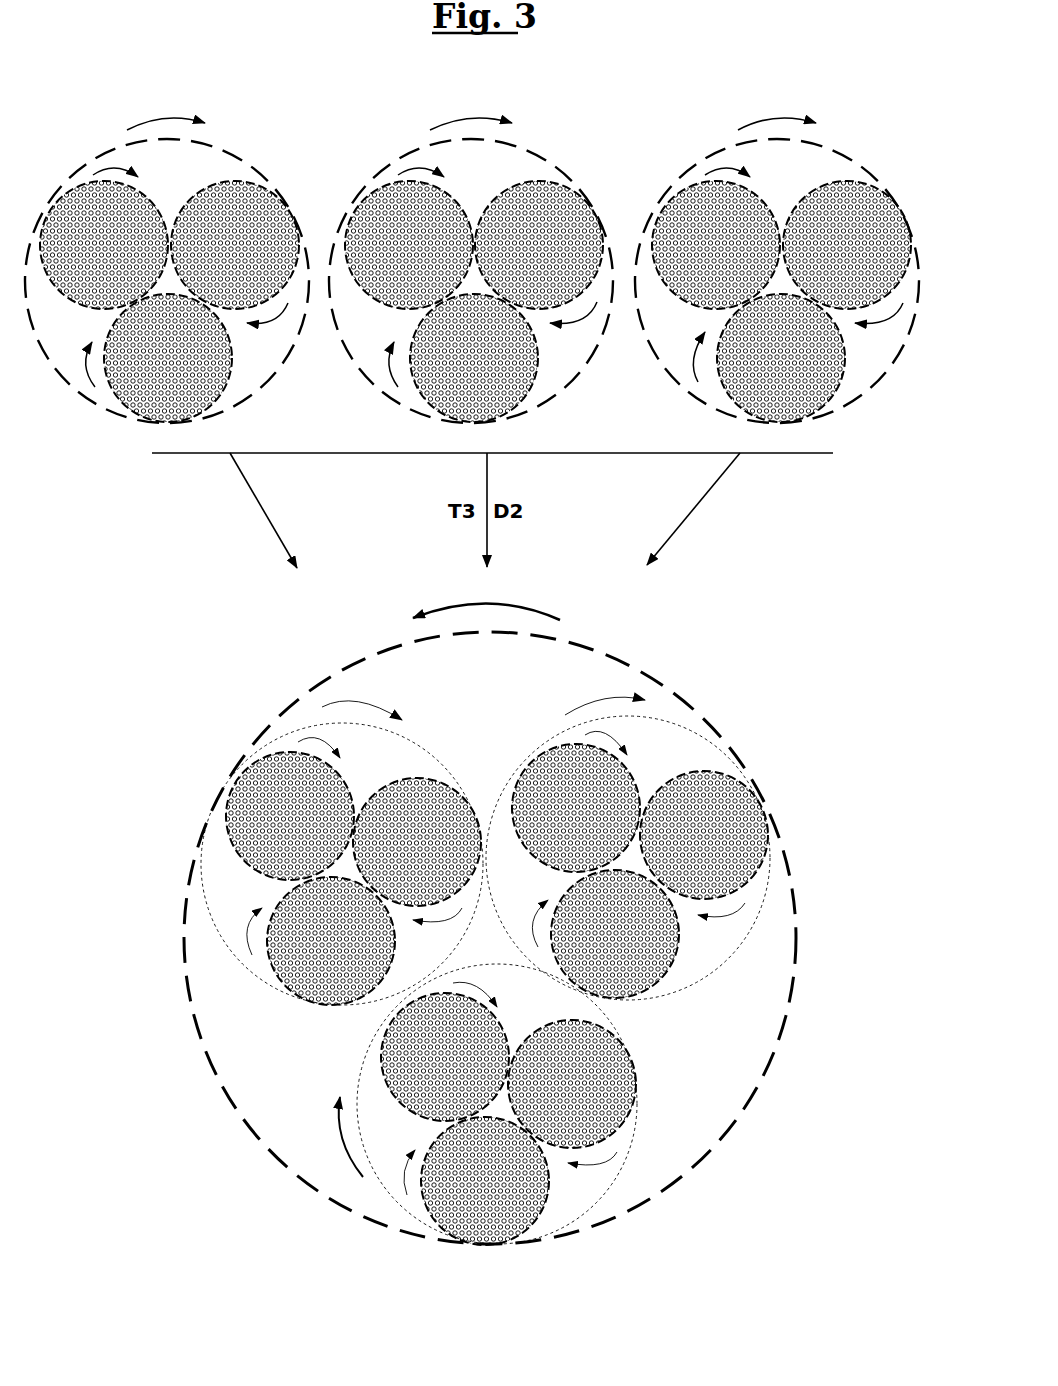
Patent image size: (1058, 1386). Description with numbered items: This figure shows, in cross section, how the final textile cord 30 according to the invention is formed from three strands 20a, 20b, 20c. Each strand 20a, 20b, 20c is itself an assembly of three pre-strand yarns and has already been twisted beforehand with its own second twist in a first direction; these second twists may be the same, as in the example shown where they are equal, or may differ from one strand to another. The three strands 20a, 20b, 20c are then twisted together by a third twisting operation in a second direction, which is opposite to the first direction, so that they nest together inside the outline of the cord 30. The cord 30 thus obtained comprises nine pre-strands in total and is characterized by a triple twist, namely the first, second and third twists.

The strand 20a is at (253, 170).
The strand 20b is at (560, 177).
The strand 20c is at (862, 165).
The final textile cord 30 is at (682, 697).